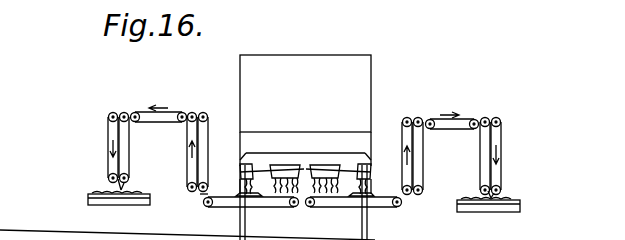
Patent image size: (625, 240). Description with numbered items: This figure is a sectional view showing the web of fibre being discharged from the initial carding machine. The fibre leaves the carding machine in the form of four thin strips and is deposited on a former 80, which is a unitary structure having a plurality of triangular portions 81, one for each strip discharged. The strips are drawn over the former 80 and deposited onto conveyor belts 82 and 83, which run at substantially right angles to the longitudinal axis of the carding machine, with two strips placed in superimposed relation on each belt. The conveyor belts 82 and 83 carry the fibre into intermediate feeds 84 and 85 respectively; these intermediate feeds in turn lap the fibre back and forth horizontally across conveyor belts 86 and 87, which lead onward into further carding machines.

The former 80 is at (252, 163).
The triangular portions 81 is at (352, 162).
The conveyor belt 82 is at (212, 208).
The conveyor belt 83 is at (381, 209).
The intermediate feed 84 is at (113, 117).
The intermediate feed 85 is at (480, 121).
The conveyor belt 86 is at (92, 195).
The conveyor belt 87 is at (515, 203).